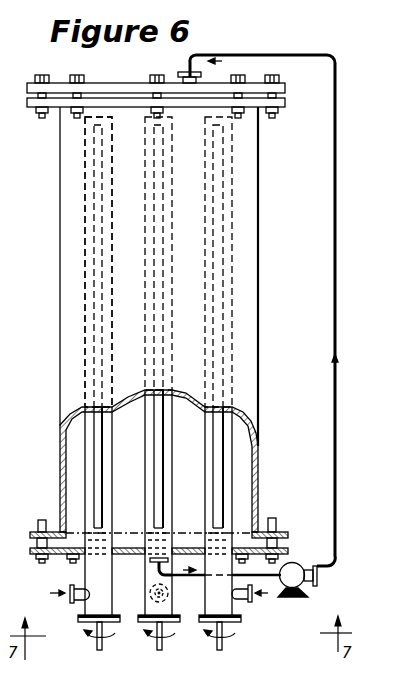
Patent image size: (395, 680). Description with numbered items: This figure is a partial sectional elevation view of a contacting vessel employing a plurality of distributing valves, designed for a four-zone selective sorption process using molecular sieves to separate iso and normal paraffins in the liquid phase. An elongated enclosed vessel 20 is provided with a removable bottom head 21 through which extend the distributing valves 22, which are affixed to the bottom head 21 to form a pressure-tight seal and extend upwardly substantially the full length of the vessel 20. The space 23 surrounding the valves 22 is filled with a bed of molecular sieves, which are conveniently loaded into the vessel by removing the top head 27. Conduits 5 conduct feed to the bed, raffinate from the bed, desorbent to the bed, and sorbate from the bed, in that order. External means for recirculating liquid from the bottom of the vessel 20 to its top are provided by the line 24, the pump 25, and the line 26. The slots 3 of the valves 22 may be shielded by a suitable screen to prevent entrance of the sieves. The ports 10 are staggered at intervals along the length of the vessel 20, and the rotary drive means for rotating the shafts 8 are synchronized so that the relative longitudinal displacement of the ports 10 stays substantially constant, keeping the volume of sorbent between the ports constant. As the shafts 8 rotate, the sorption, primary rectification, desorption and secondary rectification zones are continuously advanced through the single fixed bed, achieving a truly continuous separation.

The slots 3 is at (106, 480).
The conduits 5 is at (74, 600).
The shafts 8 is at (220, 648).
The ports 10 is at (98, 162).
The vessel 20 is at (258, 325).
The bottom head 21 is at (66, 556).
The distributing valves 22 is at (85, 262).
The space 23 is at (76, 474).
The line 24 is at (205, 577).
The pump 25 is at (297, 565).
The line 26 is at (224, 52).
The top head 27 is at (136, 83).